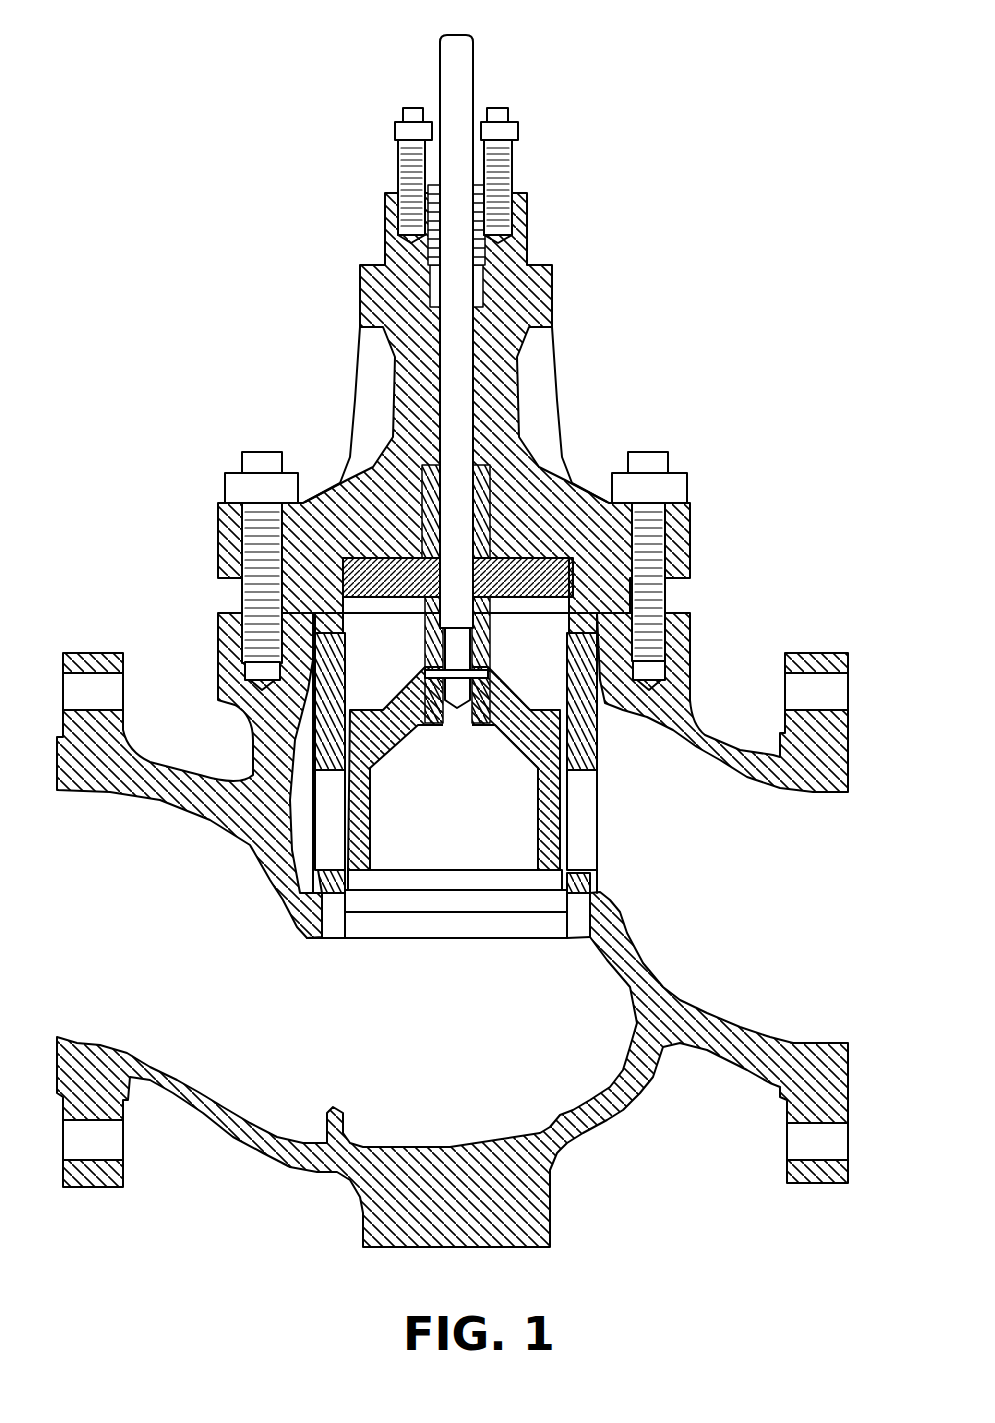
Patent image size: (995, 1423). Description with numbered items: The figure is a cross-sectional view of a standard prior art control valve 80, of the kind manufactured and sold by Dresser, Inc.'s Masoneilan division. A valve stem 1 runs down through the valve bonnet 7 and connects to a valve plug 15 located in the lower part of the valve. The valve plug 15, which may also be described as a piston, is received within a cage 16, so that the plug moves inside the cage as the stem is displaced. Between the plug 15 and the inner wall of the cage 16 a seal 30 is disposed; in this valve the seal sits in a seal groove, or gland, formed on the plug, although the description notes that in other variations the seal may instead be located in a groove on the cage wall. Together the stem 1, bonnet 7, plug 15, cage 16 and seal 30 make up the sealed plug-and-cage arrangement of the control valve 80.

The valve stem 1 is at (437, 70).
The valve bonnet 7 is at (543, 410).
The valve plug 15 is at (580, 850).
The cage 16 is at (598, 758).
The seal 30 is at (670, 745).
The control valve 80 is at (452, 629).